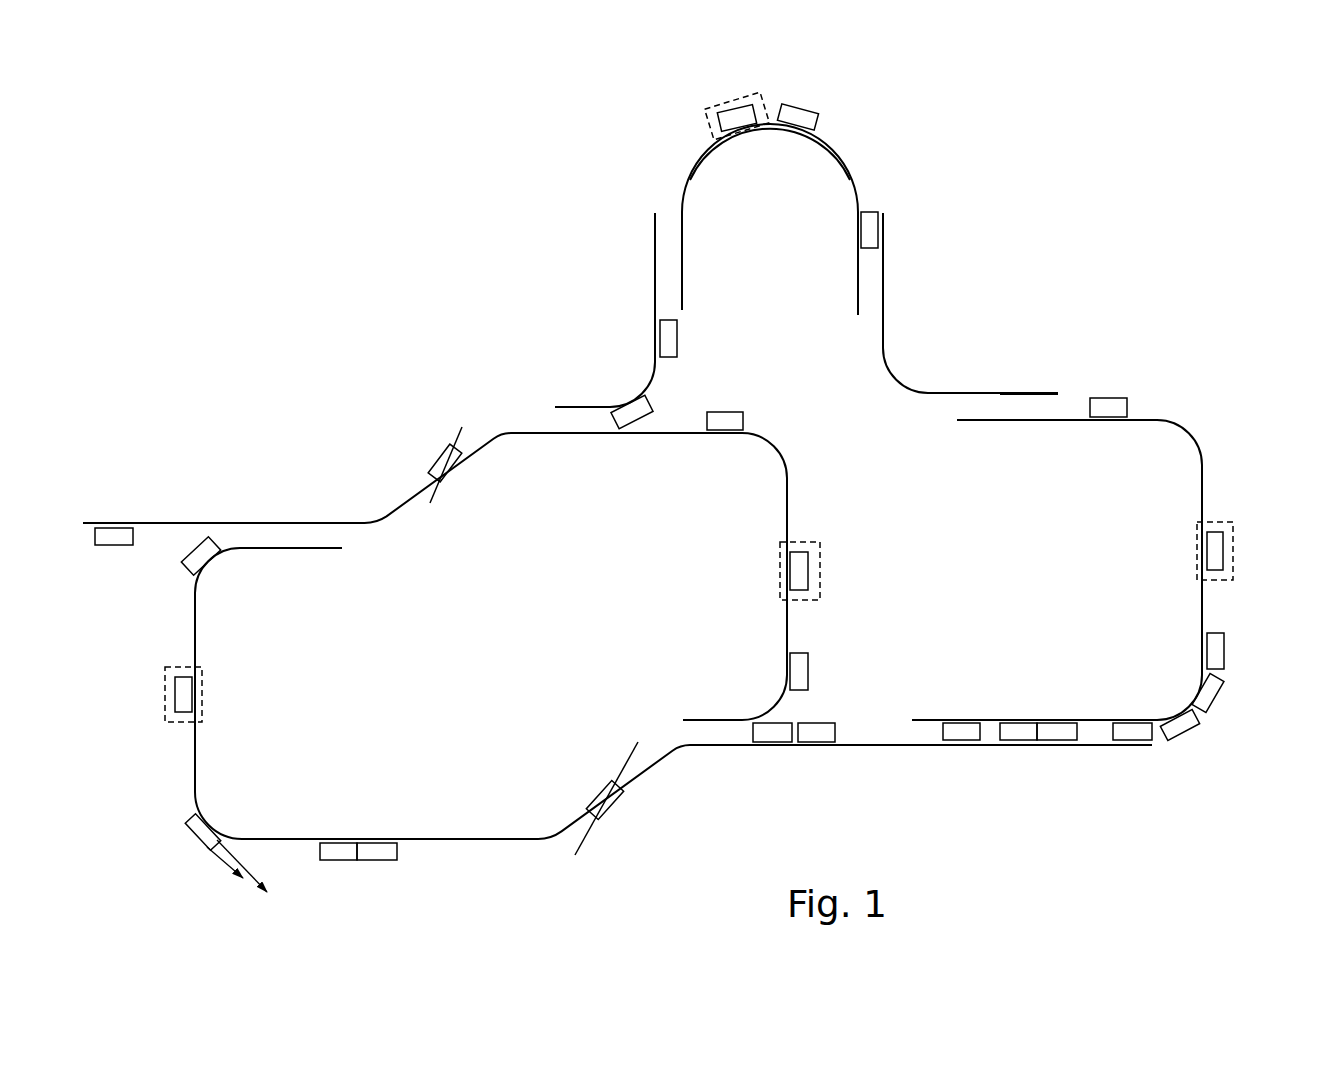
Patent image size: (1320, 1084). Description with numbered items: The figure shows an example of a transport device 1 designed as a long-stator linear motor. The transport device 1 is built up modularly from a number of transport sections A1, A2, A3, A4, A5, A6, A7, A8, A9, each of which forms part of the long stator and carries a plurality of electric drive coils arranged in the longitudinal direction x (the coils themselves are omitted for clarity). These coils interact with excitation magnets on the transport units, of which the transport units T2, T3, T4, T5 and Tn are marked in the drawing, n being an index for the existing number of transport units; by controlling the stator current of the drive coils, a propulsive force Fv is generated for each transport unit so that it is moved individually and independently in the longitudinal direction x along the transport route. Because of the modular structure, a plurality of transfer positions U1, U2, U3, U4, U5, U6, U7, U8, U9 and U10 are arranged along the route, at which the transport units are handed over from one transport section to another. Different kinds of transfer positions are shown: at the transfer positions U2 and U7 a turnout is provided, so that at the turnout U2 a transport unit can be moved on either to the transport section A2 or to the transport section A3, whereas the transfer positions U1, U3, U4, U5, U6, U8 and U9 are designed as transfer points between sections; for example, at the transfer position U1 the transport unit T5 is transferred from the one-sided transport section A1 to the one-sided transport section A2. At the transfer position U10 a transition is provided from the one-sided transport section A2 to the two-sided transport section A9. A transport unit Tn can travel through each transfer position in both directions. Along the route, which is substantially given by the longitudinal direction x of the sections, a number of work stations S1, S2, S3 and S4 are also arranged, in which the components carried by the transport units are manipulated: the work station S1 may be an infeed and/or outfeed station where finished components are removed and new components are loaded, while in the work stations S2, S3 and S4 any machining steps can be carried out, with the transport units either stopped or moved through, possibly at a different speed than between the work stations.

The transport device 1 is at (950, 757).
The transport section A1 is at (473, 843).
The transport section A2 is at (872, 747).
The transport section A3 is at (790, 500).
The transport section A4 is at (1205, 470).
The transport section A5 is at (885, 310).
The transport section A6 is at (845, 160).
The transport section A7 is at (655, 250).
The transport section A8 is at (290, 520).
The transport section A9 is at (1052, 705).
The transfer position U1 is at (633, 800).
The transfer position U2 is at (713, 703).
The transfer position U3 is at (1102, 752).
The transfer position U4 is at (993, 380).
The transfer position U5 is at (905, 215).
The transfer position U6 is at (640, 285).
The transfer position U7 is at (617, 452).
The transfer position U8 is at (430, 450).
The transfer position U9 is at (200, 520).
The transfer position U10 is at (965, 705).
The work station S1 is at (163, 675).
The work station S2 is at (820, 572).
The work station S3 is at (1225, 550).
The work station S4 is at (705, 108).
The transport unit T2 is at (182, 698).
The transport unit T3 is at (200, 833).
The transport unit T4 is at (348, 852).
The transport unit T5 is at (770, 735).
The transport unit Tn is at (108, 540).
The longitudinal direction x is at (225, 872).
The propulsive force Fv is at (259, 878).